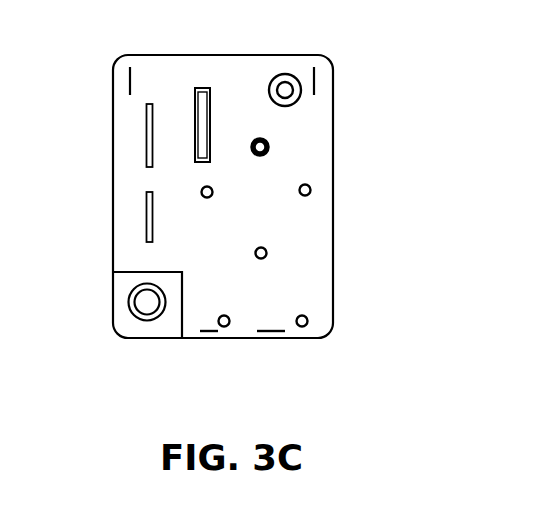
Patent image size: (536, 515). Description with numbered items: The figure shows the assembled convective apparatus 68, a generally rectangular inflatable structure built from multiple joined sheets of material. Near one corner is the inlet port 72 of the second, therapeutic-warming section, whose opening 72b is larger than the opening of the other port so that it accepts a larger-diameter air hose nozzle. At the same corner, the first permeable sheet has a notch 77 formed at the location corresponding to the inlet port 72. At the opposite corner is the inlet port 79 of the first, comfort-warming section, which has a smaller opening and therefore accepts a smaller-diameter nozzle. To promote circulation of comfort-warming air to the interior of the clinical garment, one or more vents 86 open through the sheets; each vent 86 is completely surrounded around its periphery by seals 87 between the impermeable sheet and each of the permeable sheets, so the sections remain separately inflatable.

The convective apparatus 68 is at (368, 215).
The inlet port 72 is at (130, 317).
The opening 72b is at (144, 303).
The notch 77 is at (118, 273).
The inlet port 79 is at (286, 74).
The vent 86 is at (240, 127).
The seals 87 is at (203, 88).